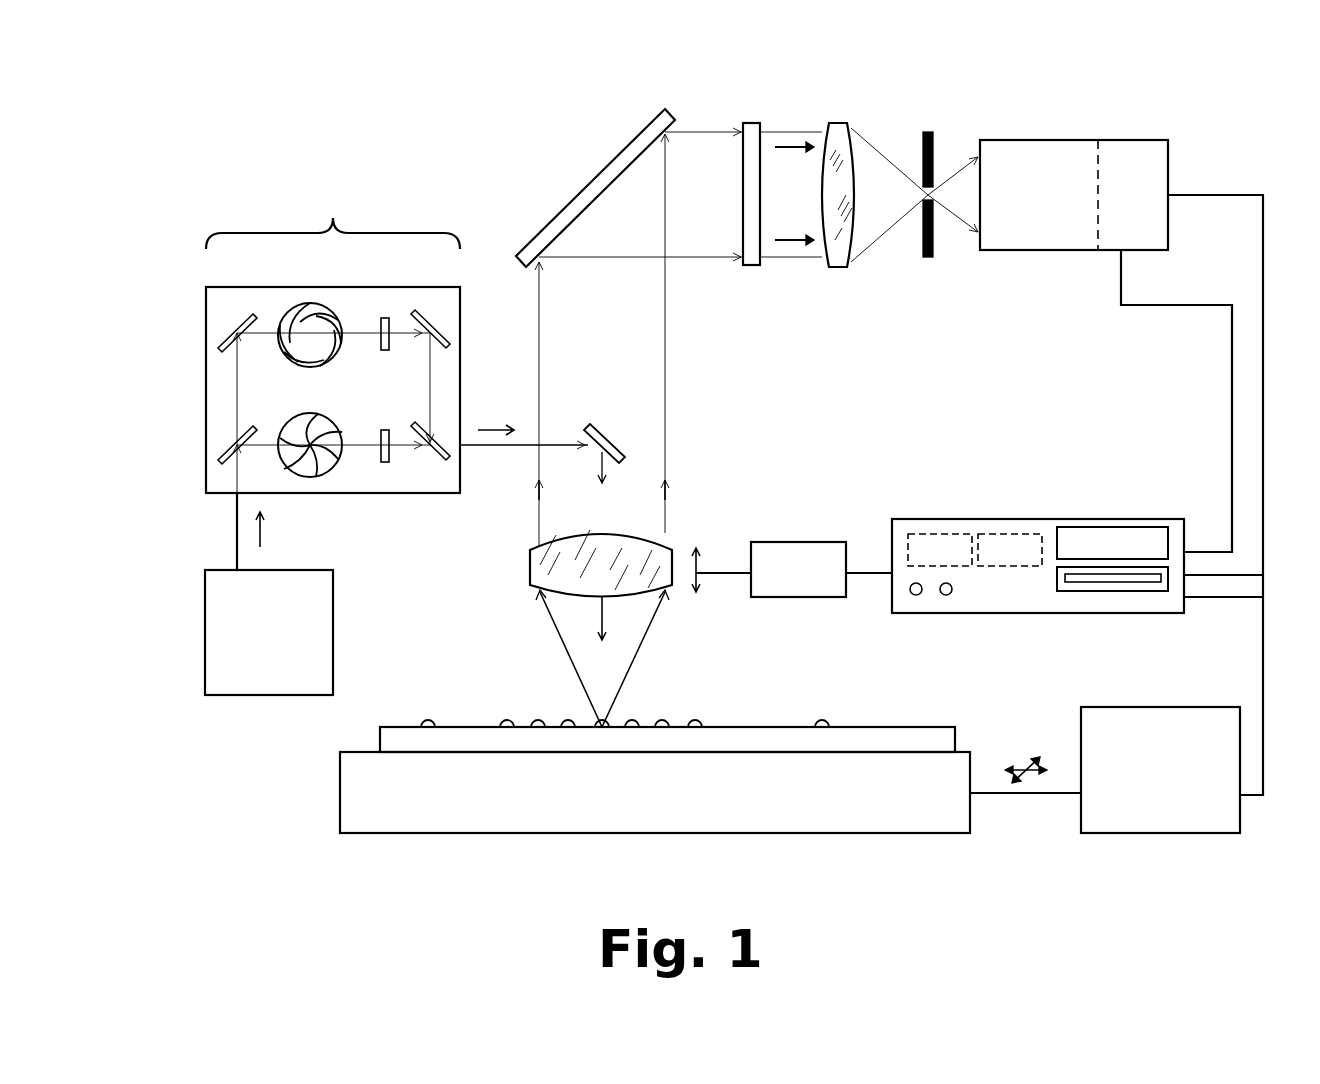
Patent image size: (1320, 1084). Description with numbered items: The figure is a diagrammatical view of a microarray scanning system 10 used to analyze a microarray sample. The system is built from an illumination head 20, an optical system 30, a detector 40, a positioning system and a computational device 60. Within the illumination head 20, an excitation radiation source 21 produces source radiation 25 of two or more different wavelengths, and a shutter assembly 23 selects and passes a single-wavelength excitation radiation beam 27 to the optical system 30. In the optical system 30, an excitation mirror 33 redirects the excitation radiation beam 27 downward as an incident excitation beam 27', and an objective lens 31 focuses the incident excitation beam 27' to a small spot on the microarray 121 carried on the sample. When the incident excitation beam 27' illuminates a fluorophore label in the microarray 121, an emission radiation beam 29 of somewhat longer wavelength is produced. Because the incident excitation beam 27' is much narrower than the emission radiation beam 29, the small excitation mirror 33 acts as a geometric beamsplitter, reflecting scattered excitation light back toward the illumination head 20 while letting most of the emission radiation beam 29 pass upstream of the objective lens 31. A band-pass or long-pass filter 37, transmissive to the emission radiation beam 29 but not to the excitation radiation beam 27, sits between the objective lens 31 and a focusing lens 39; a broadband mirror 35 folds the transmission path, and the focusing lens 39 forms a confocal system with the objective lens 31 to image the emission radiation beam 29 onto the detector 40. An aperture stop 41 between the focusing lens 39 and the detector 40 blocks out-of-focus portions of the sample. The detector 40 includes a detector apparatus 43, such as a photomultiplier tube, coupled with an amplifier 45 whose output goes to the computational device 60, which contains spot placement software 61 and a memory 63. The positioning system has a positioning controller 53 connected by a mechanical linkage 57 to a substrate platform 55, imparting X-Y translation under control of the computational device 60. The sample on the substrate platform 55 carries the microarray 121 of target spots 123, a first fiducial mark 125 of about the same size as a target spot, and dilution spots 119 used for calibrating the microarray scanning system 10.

The microarray scanning system 10 is at (748, 889).
The illumination head 20 is at (350, 211).
The excitation radiation source 21 is at (333, 608).
The shutter assembly 23 is at (462, 300).
The source radiation 25 is at (262, 542).
The excitation radiation beam 27 is at (524, 443).
The incident excitation beam 27' is at (654, 658).
The emission radiation beam 29 is at (550, 625).
The optical system 30 is at (580, 133).
The objective lens 31 is at (530, 567).
The excitation mirror 33 is at (594, 427).
The broadband mirror 35 is at (554, 224).
The band-pass or long-pass filter 37 is at (754, 268).
The focusing lens 39 is at (840, 123).
The detector 40 is at (1110, 168).
The aperture stop 41 is at (928, 258).
The detector apparatus 43 is at (1048, 155).
The amplifier 45 is at (1128, 155).
The positioning controller 53 is at (1155, 707).
The substrate platform 55 is at (340, 778).
The mechanical linkage 57 is at (995, 793).
The computational device 60 is at (1038, 542).
The spot placement software 61 is at (932, 534).
The memory 63 is at (1012, 534).
The dilution spots 119 is at (824, 722).
The microarray 121 is at (668, 693).
The target spots 123 is at (540, 720).
The first fiducial mark 125 is at (428, 720).